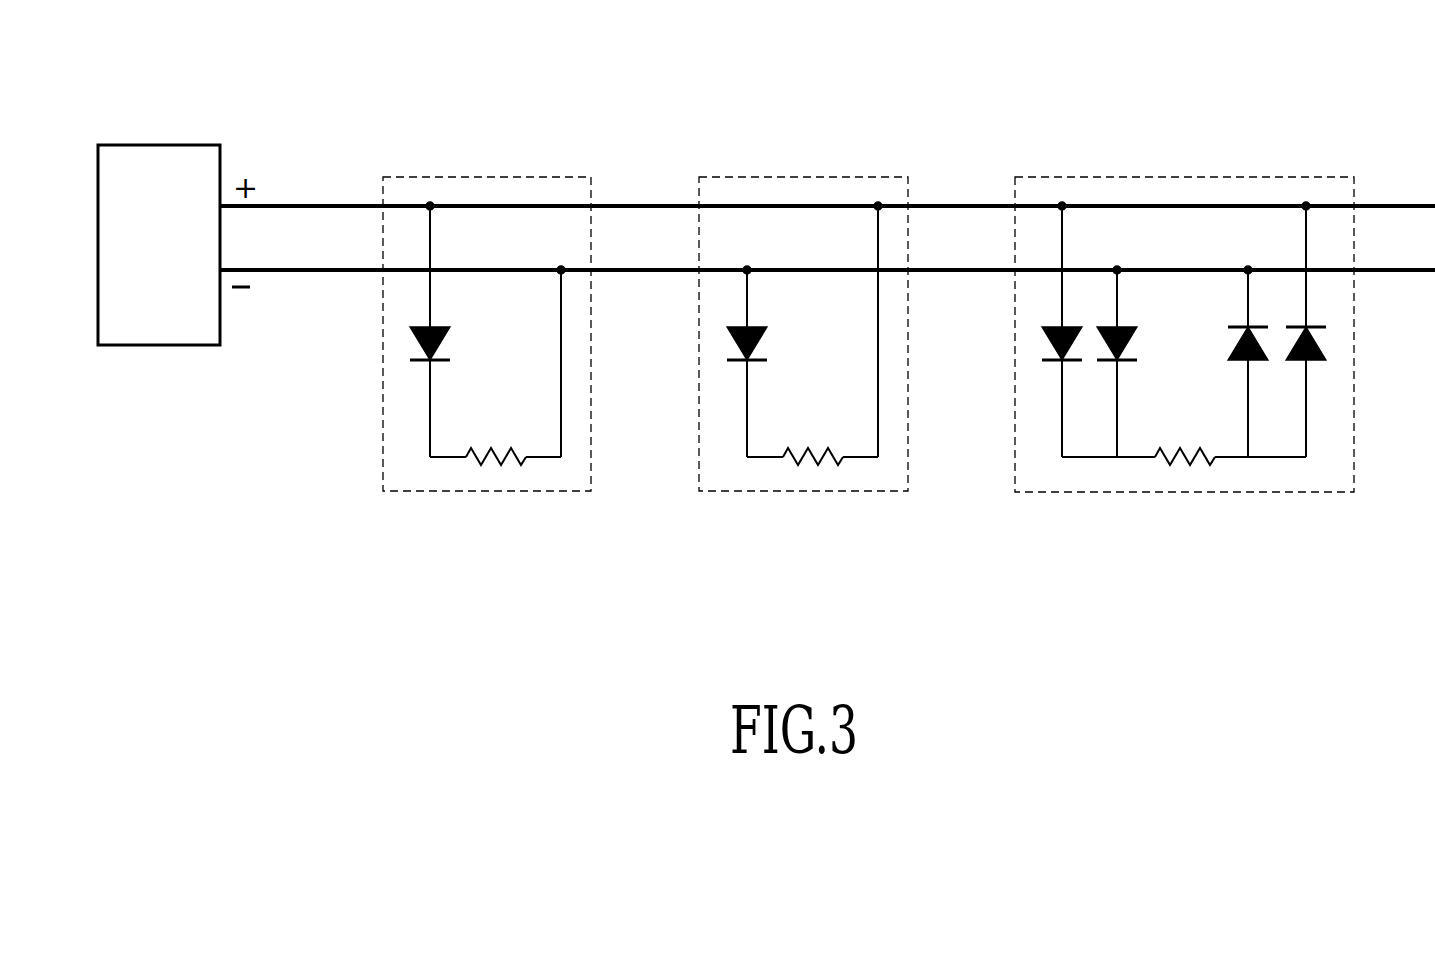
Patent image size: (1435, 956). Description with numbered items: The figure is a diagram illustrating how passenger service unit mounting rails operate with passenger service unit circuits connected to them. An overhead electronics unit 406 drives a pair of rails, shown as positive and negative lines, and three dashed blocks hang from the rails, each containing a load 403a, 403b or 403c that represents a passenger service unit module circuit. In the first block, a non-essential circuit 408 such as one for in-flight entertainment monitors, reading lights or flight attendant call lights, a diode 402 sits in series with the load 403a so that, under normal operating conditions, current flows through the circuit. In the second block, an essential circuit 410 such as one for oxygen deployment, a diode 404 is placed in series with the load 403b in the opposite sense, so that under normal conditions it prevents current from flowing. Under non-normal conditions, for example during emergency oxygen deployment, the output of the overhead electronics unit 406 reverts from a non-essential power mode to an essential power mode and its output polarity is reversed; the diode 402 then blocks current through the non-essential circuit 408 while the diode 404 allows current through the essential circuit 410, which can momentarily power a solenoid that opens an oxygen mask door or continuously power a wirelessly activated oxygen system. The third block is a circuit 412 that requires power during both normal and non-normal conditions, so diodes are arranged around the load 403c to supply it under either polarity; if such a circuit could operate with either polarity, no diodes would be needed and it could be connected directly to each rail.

The diode 402 is at (447, 321).
The load 403a is at (497, 447).
The load 403b is at (812, 447).
The load 403c is at (1183, 447).
The diode 404 is at (764, 321).
The overhead electronics unit 406 is at (145, 144).
The non-essential circuit 408 is at (487, 352).
The essential circuit 410 is at (803, 352).
The circuit requiring power during both normal and non-normal conditions 412 is at (1184, 352).